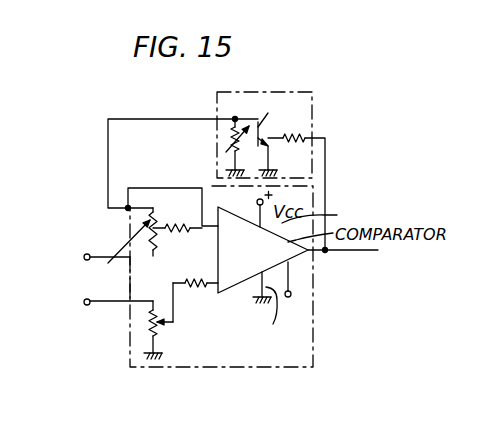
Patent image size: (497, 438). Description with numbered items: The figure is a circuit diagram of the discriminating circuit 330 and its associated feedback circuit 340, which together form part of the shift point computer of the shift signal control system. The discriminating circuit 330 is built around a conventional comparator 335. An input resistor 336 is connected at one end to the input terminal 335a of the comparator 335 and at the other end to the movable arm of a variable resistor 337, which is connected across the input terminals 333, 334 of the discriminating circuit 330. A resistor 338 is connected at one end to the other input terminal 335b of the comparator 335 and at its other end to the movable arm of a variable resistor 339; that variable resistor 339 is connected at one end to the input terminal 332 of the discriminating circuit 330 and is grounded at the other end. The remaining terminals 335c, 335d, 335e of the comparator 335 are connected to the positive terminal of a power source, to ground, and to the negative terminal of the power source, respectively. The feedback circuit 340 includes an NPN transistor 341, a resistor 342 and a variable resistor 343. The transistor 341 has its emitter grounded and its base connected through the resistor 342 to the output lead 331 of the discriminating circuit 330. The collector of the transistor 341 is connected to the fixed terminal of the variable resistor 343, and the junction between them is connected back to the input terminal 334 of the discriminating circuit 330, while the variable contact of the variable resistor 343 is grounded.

The discriminating circuit 330 is at (319, 360).
The output lead 331 is at (352, 251).
The input terminal 332 is at (86, 305).
The input terminal 333 is at (84, 257).
The input terminal 334 is at (126, 209).
The comparator 335 is at (206, 234).
The input terminal 335a is at (207, 186).
The input terminal 335b is at (257, 292).
The terminal 335c is at (334, 217).
The terminal 335d is at (282, 317).
The terminal 335e is at (290, 274).
The input resistor 336 is at (172, 214).
The variable resistor 337 is at (101, 278).
The resistor 338 is at (174, 295).
The variable resistor 339 is at (161, 324).
The feedback circuit 340 is at (313, 102).
The NPN transistor 341 is at (275, 136).
The resistor 342 is at (296, 135).
The variable resistor 343 is at (231, 138).